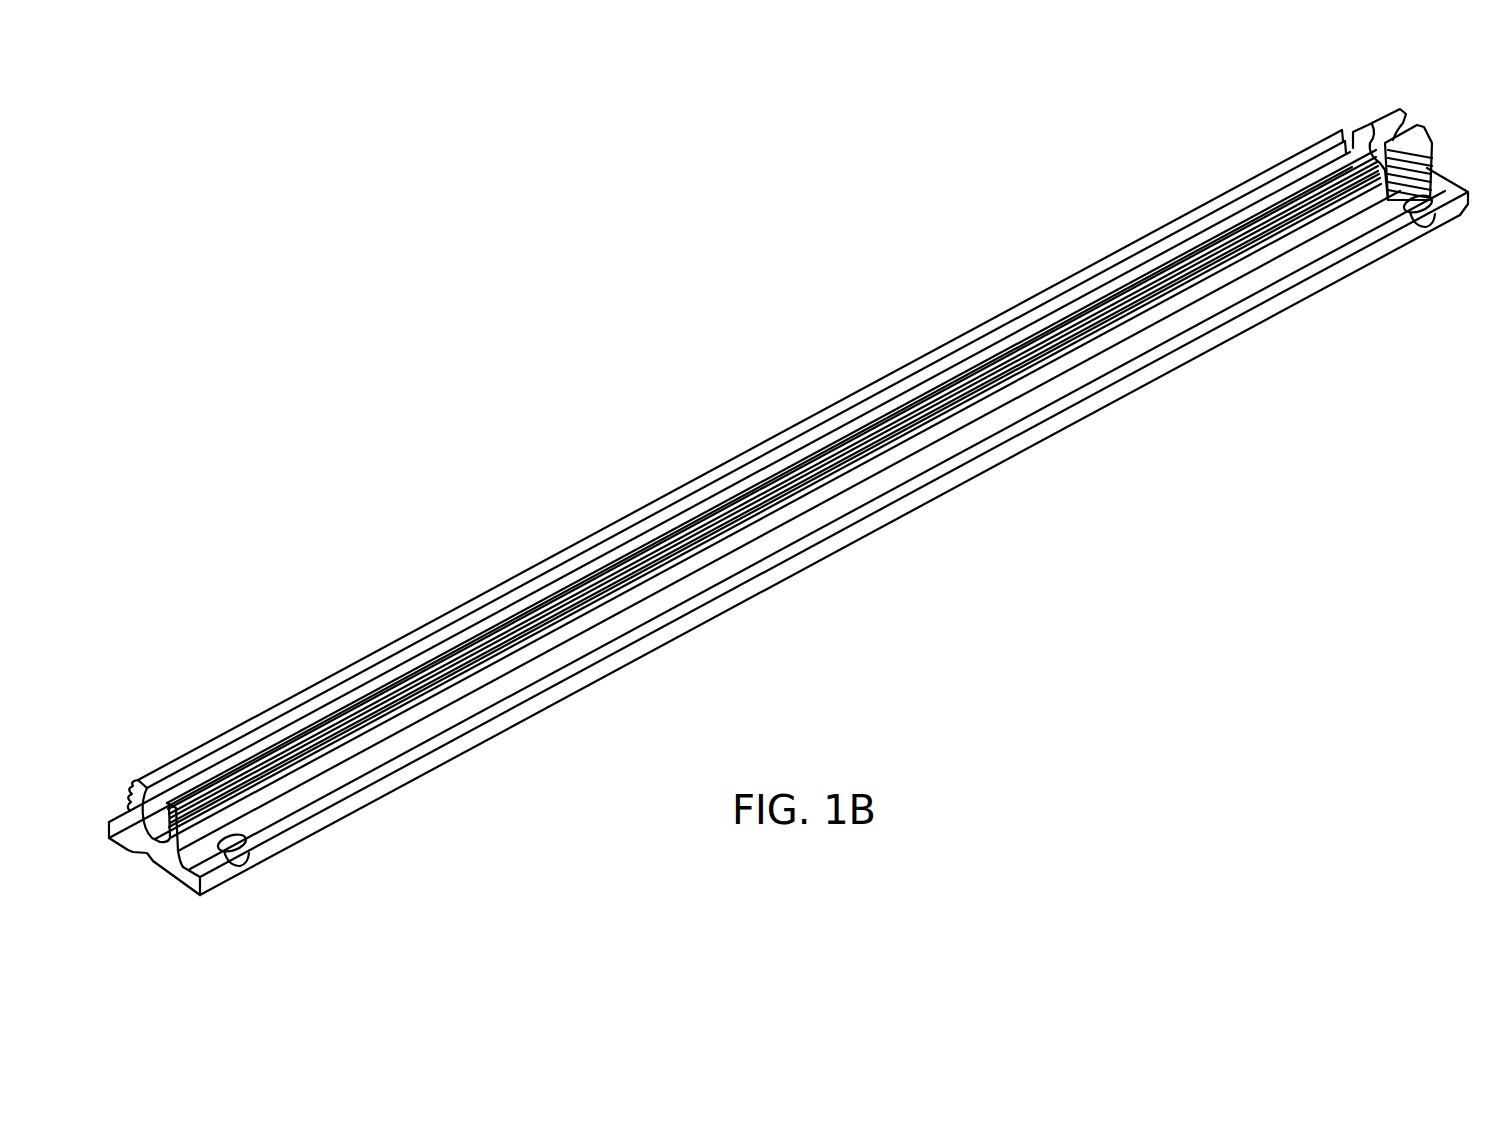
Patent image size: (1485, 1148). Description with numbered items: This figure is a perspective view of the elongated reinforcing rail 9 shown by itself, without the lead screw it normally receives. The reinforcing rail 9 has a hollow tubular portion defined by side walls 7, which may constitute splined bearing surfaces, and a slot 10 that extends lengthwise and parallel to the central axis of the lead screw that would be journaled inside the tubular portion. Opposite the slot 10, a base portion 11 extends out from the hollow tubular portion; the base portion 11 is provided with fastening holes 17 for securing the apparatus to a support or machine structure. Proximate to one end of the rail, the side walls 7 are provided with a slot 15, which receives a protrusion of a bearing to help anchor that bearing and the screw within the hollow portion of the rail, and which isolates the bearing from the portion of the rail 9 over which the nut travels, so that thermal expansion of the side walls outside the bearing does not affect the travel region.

The reinforcing rail 9 is at (1011, 216).
The slot 10 is at (272, 731).
The side walls 7 is at (958, 415).
The base portion 11 is at (877, 488).
The slot 15 is at (1341, 125).
The fastening holes 17 is at (250, 863).